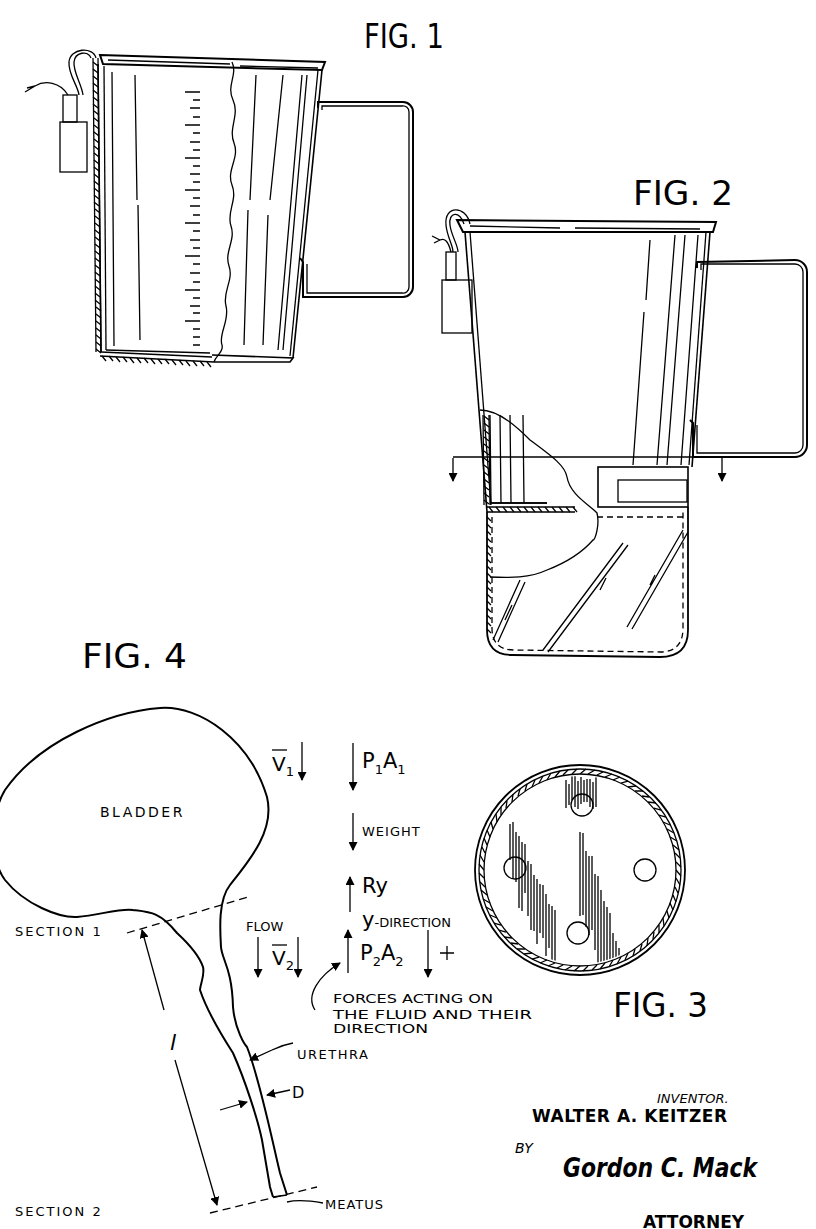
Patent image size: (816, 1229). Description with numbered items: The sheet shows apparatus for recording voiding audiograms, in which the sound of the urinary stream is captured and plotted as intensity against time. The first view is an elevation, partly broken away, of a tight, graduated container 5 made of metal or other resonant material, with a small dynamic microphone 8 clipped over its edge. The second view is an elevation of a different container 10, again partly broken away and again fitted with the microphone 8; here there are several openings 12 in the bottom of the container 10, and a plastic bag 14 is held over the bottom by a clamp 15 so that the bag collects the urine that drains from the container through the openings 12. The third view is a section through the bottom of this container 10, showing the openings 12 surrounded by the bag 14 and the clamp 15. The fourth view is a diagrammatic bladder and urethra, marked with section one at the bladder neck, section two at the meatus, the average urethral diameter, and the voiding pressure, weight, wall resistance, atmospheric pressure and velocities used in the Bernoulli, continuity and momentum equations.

In FIG. 1, the graduated container 5 is at (93, 258).
In FIG. 1, the dynamic microphone 8 is at (68, 152).
In FIG. 2, the dynamic microphone 8 is at (455, 312).
In FIG. 2, the container 10 is at (478, 380).
In FIG. 2, the openings 12 is at (535, 515).
In FIG. 3, the openings 12 is at (585, 808).
In FIG. 2, the plastic bag 14 is at (487, 562).
In FIG. 3, the plastic bag 14 is at (678, 895).
In FIG. 2, the clamp 15 is at (670, 500).
In FIG. 3, the clamp 15 is at (683, 847).